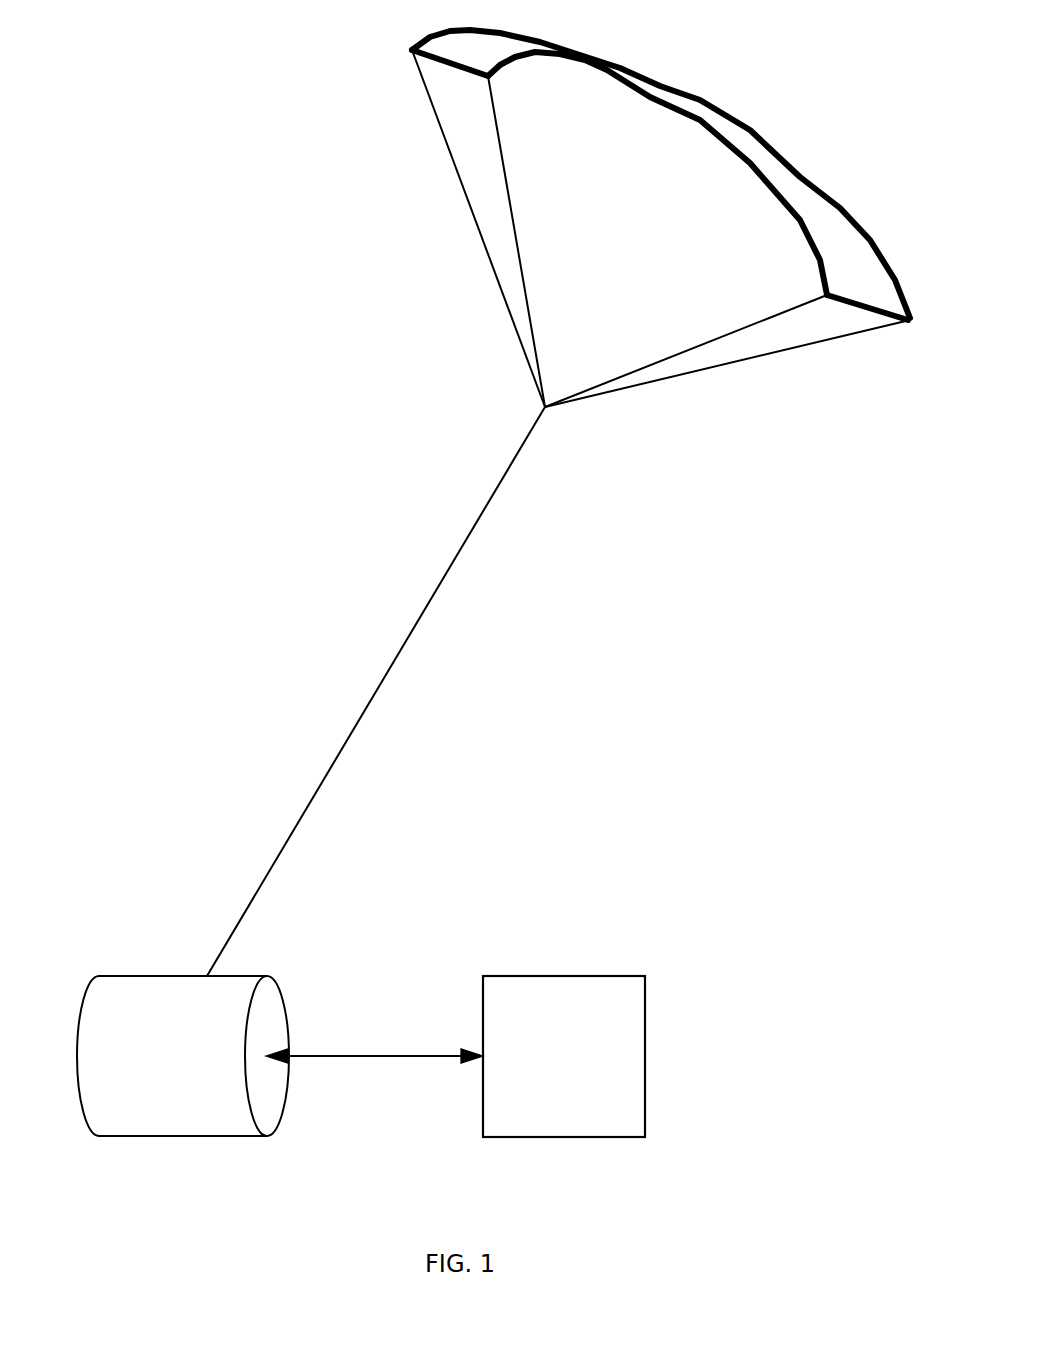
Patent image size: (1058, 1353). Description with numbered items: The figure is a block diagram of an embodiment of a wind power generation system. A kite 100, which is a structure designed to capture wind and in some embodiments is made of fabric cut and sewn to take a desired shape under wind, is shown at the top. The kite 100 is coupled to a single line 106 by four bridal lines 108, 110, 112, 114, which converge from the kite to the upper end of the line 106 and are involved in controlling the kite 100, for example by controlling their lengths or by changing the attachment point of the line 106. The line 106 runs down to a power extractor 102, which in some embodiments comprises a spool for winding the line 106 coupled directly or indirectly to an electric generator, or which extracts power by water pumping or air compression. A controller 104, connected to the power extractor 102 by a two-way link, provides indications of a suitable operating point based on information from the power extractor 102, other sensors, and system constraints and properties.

The kite 100 is at (823, 197).
The power extractor 102 is at (123, 990).
The controller 104 is at (522, 998).
The line 106 is at (372, 693).
The bridal line 108 is at (660, 362).
The bridal line 110 is at (747, 360).
The bridal line 112 is at (515, 207).
The bridal line 114 is at (495, 275).